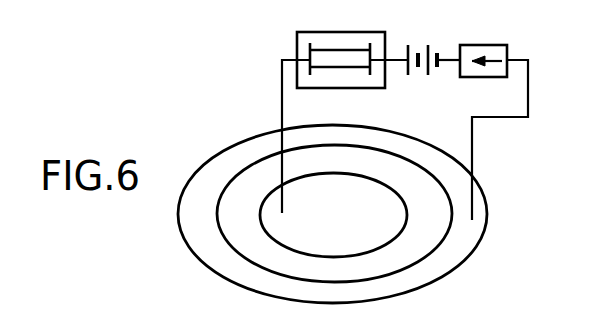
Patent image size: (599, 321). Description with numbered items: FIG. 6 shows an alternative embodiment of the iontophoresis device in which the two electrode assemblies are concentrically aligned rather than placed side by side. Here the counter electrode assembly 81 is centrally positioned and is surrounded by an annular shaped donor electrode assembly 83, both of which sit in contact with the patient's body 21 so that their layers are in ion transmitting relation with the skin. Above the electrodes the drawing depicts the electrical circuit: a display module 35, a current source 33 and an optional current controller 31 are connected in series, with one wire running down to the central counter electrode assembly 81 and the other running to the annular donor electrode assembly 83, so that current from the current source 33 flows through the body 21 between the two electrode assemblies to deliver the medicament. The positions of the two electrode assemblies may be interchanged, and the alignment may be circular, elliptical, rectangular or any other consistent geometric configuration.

The patient's body 21 is at (318, 215).
The current controller 31 is at (475, 45).
The current source 33 is at (425, 45).
The display module 35 is at (356, 38).
The counter electrode assembly 81 is at (385, 222).
The donor electrode assembly 83 is at (463, 245).